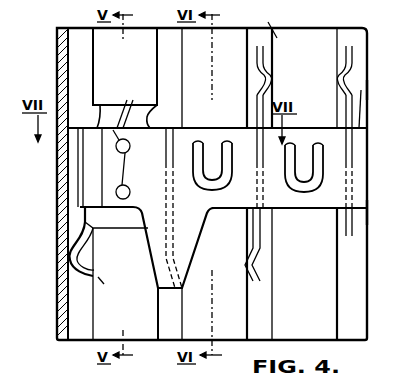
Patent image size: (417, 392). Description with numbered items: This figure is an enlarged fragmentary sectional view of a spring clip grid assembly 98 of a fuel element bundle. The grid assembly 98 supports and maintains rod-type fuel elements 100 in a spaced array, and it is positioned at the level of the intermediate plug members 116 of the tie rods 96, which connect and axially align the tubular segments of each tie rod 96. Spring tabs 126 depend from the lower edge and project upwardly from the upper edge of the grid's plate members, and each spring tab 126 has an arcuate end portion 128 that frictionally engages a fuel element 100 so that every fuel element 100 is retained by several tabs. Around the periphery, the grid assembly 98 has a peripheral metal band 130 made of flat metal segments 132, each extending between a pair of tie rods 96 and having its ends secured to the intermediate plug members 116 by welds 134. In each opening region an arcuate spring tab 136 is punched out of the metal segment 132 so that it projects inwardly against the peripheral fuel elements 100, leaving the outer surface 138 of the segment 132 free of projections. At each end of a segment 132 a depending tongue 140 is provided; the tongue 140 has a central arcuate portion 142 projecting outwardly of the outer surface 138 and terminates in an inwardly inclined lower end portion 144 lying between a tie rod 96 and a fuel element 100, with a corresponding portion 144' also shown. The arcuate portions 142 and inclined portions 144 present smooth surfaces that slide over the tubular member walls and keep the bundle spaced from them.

The tie rod 96 is at (93, 42).
The spring clip grid assembly 98 is at (405, 180).
The rod-type fuel element 100 is at (260, 21).
The intermediate plug member 116 is at (150, 115).
The spring tab 126 is at (340, 90).
The arcuate end portion 128 is at (338, 64).
The peripheral metal band 130 is at (403, 98).
The flat metal segment 132 is at (75, 163).
The weld 134 is at (125, 139).
The arcuate spring tab 136 is at (213, 173).
The outer surface 138 is at (367, 213).
The depending tongue 140 is at (68, 261).
The central arcuate portion 142 is at (78, 233).
The inwardly inclined lower end portion 144 is at (50, 283).
The neck 144' is at (191, 306).